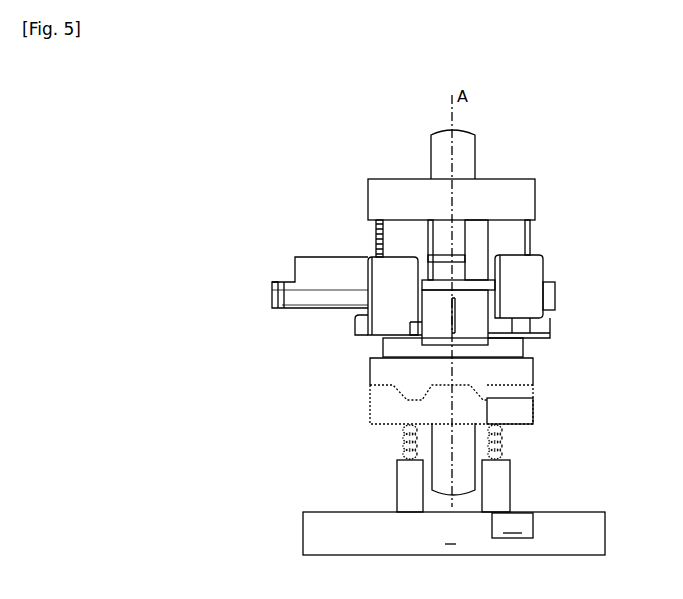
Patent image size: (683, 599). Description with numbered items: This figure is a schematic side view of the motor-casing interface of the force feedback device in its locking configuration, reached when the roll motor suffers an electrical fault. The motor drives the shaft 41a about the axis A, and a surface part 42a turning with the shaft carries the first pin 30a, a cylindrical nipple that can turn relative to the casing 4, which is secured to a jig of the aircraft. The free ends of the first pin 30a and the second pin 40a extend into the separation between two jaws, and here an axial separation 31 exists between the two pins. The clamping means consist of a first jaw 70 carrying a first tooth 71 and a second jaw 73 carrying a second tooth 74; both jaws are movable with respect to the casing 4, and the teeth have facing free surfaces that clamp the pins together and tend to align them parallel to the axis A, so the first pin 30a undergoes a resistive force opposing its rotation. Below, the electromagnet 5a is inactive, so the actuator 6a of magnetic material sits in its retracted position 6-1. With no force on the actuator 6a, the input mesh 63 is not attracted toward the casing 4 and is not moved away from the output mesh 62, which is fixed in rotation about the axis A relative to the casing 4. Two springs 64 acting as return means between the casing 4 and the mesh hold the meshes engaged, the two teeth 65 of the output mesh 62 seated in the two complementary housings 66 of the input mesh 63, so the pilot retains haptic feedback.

The shaft 41a is at (474, 160).
The surface part 42a is at (527, 198).
The first pin 30a is at (464, 231).
The second tooth 74 is at (375, 272).
The second pin 40a is at (440, 313).
The axial separation 31 is at (497, 285).
The first tooth 71 is at (527, 266).
The first jaw 70 is at (529, 305).
The second jaw 73 is at (386, 348).
The output mesh 62 is at (368, 371).
The input mesh 63 is at (368, 412).
The teeth of the output mesh 65 is at (497, 383).
The complementary housings 66 is at (505, 388).
The retracted position 6-1 is at (469, 380).
The actuator 6a is at (546, 415).
The springs 64 is at (420, 455).
The casing 4 is at (454, 533).
The electromagnet 5a is at (512, 525).